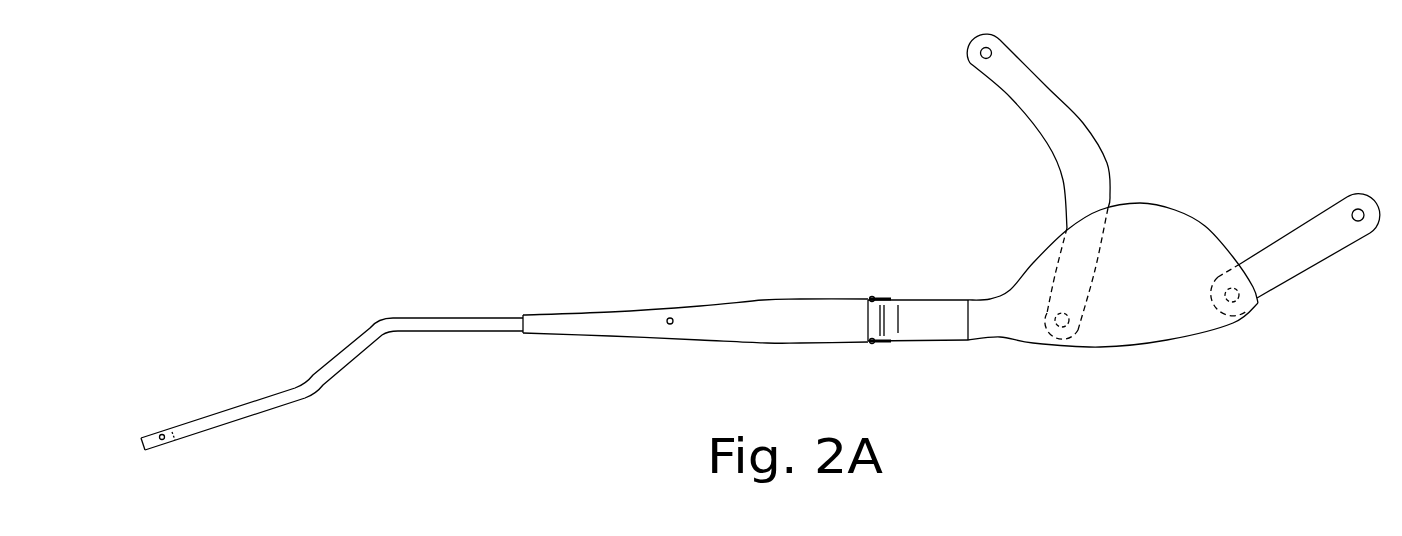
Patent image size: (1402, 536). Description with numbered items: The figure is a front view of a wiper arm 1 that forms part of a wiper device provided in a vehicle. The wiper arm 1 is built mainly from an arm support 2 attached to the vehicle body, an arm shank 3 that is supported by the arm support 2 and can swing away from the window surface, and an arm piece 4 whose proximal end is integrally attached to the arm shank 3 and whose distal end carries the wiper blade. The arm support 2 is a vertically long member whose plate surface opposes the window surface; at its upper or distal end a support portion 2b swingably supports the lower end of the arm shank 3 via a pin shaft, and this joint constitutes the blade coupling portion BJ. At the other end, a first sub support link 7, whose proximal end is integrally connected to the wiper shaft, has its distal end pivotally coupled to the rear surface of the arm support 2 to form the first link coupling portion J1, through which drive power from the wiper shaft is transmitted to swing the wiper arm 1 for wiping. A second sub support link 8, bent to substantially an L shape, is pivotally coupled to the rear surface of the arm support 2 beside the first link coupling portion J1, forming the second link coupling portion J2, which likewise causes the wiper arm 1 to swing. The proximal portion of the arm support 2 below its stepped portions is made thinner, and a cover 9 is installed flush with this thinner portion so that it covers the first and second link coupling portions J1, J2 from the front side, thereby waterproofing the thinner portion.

The wiper arm 1 is at (660, 173).
The arm support 2 is at (928, 300).
The support portion 2b is at (875, 327).
The arm shank 3 is at (795, 300).
The arm piece 4 is at (367, 343).
The first sub support link 7 is at (1333, 238).
The second sub support link 8 is at (1037, 87).
The cover 9 is at (1178, 242).
The blade coupling portion BJ is at (878, 287).
The first link coupling portion J1 is at (1242, 305).
The second link coupling portion J2 is at (1058, 308).